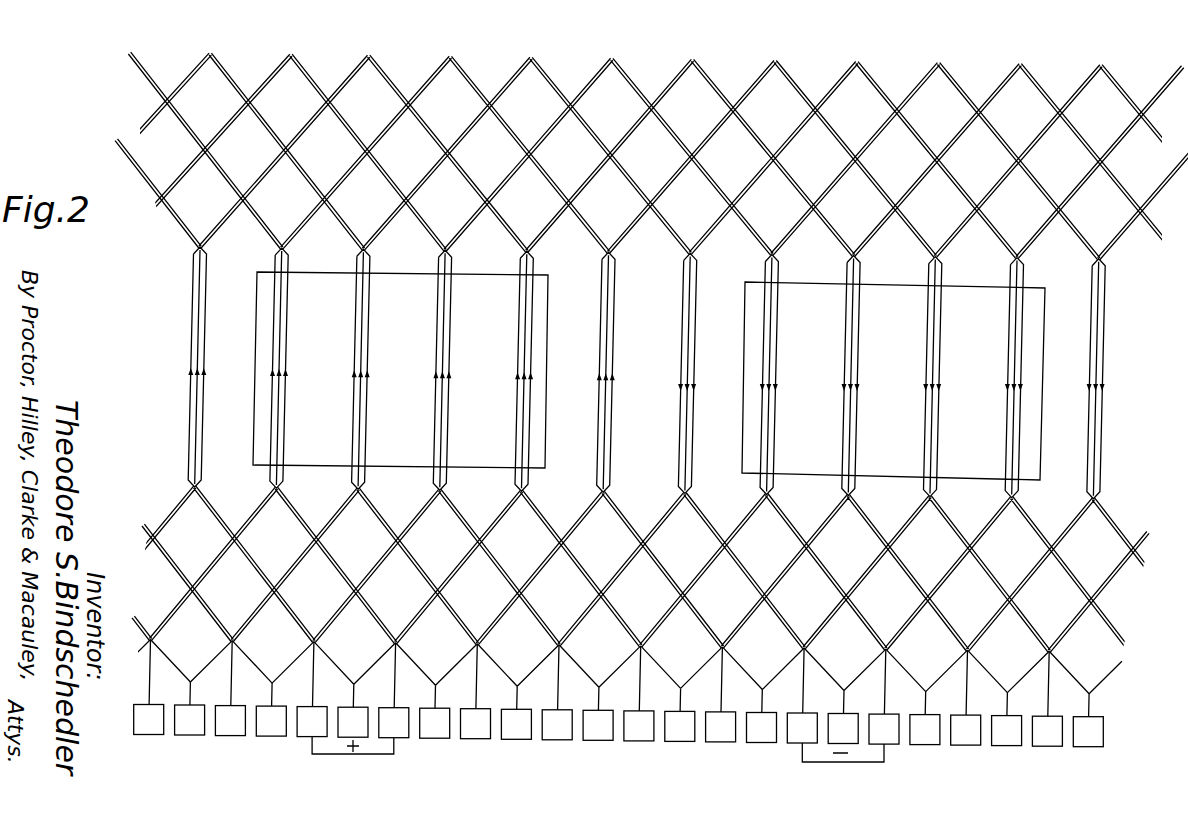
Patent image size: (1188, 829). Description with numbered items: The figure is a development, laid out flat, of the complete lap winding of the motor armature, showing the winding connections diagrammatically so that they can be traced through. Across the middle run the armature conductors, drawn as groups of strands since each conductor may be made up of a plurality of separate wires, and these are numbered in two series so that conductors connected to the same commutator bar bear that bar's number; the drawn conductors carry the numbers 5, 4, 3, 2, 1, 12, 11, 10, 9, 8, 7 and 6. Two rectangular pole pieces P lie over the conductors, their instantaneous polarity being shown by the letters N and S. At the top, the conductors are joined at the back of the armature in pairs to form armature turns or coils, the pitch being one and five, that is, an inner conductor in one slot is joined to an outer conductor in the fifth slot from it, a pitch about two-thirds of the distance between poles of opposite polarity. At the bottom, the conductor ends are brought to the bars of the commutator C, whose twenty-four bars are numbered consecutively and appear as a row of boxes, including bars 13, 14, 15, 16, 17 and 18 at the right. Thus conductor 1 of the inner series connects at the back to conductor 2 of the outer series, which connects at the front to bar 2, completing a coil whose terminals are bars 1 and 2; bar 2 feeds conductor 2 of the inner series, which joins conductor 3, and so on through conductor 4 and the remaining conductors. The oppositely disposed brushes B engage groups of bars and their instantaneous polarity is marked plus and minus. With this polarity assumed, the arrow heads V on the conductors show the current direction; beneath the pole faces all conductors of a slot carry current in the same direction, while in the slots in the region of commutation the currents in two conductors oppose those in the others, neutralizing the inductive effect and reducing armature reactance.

The commutator bar and armature conductor number 1 is at (524, 386).
The commutator bar and armature conductor number 2 is at (442, 385).
The commutator bar and armature conductor number 3 is at (361, 384).
The commutator bar and armature conductor number 4 is at (279, 383).
The commutator bar and armature conductor number 5 is at (197, 382).
The commutator bar and armature conductor number 6 is at (1096, 394).
The commutator bar and armature conductor number 7 is at (1014, 393).
The commutator bar and armature conductor number 8 is at (932, 392).
The commutator bar and armature conductor number 9 is at (851, 391).
The commutator bar and armature conductor number 10 is at (768, 390).
The commutator bar and armature conductor number 11 is at (686, 388).
The commutator bar and armature conductor number 12 is at (604, 387).
The commutator bar number 13 is at (884, 729).
The commutator bar number 14 is at (925, 730).
The commutator bar number 15 is at (966, 730).
The commutator bar number 16 is at (1007, 731).
The commutator bar number 17 is at (1047, 731).
The commutator bar number 18 is at (1088, 732).
The poles P is at (892, 487).
The north polarity indication N is at (398, 370).
The south polarity indication S is at (888, 380).
The arrow heads V is at (1102, 380).
The commutator C is at (619, 748).
The brushes B is at (874, 773).